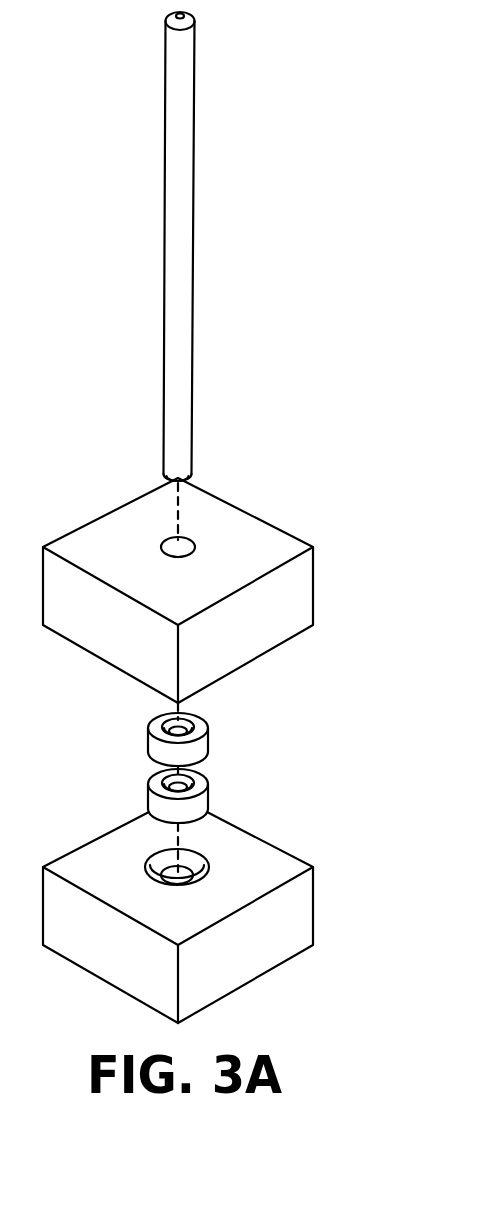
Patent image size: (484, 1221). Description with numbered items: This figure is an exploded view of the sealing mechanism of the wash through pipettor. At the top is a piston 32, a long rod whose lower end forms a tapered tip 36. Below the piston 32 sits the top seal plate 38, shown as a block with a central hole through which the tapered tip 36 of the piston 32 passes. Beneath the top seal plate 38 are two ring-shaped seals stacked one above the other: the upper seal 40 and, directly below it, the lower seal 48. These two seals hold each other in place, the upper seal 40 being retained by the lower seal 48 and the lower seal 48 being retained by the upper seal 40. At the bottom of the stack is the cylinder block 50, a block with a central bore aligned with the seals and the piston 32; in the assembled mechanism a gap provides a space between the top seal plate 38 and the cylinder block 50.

The piston 32 is at (183, 202).
The tapered tip 36 is at (194, 478).
The top seal plate 38 is at (285, 528).
The upper seal 40 is at (208, 742).
The lower seal 48 is at (208, 798).
The cylinder block 50 is at (313, 920).